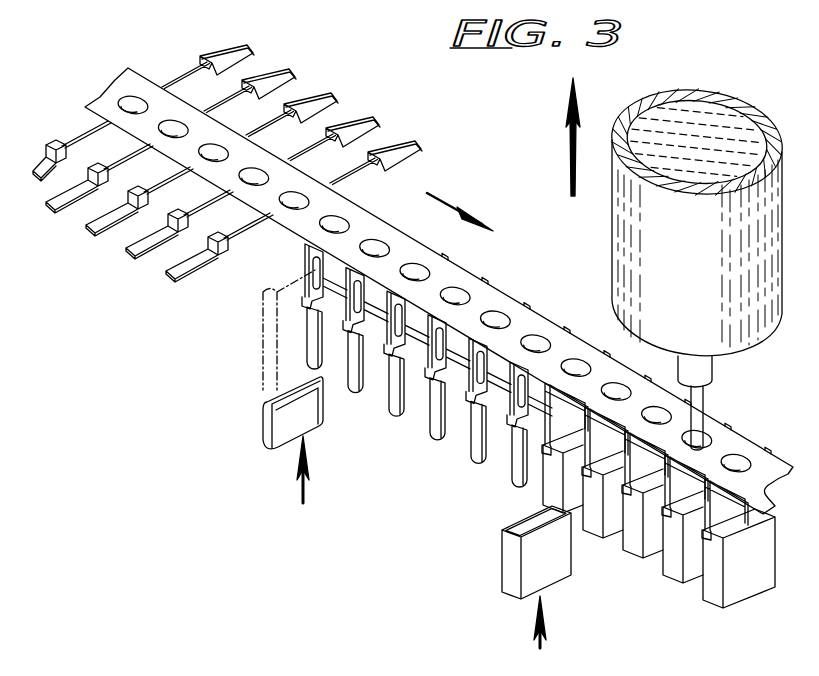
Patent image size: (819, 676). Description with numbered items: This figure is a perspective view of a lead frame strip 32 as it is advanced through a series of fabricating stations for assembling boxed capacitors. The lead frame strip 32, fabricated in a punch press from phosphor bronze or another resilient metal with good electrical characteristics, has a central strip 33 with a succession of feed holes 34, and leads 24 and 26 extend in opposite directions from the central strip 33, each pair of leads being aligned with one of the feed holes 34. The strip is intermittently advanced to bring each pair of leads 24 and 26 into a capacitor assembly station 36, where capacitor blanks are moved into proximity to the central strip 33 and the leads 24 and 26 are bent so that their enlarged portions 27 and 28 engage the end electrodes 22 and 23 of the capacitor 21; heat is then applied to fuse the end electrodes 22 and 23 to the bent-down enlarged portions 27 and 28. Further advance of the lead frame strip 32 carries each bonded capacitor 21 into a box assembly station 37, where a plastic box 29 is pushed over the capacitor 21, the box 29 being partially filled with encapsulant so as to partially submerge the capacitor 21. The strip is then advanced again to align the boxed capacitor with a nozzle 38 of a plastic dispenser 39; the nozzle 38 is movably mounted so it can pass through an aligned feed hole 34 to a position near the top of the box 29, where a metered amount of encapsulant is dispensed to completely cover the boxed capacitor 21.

The capacitor 21 is at (295, 438).
The end electrode 22 is at (268, 421).
The end electrode 23 is at (322, 400).
The lead 24 is at (113, 162).
The lead 26 is at (207, 111).
The enlarged portion 27 is at (72, 212).
The enlarged portion 28 is at (315, 106).
The plastic box 29 is at (613, 522).
The lead frame strip 32 is at (108, 74).
The central strip 33 is at (416, 242).
The feed hole 34 is at (212, 160).
The capacitor assembly station 36 is at (247, 382).
The box assembly station 37 is at (487, 586).
The nozzle 38 is at (704, 406).
The plastic dispenser 39 is at (626, 276).